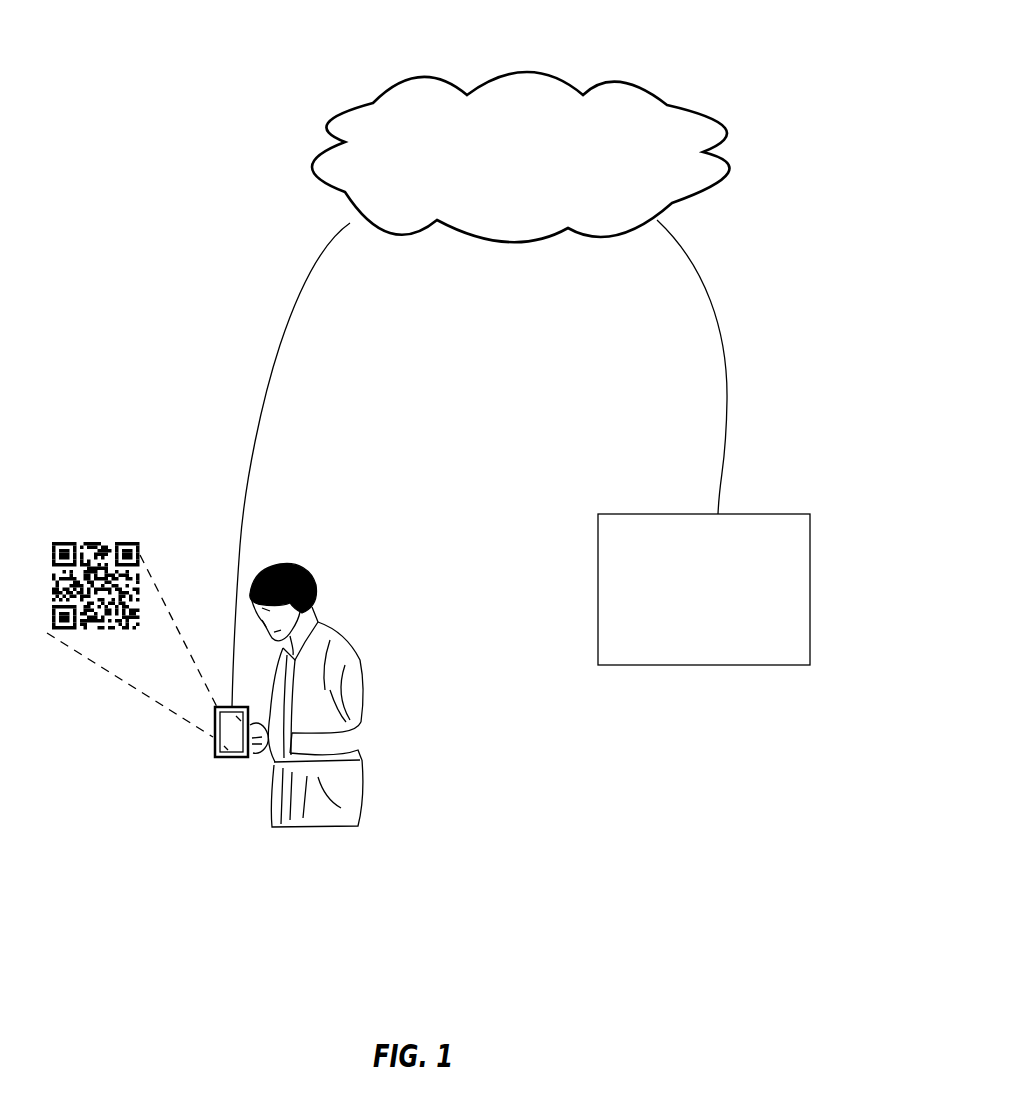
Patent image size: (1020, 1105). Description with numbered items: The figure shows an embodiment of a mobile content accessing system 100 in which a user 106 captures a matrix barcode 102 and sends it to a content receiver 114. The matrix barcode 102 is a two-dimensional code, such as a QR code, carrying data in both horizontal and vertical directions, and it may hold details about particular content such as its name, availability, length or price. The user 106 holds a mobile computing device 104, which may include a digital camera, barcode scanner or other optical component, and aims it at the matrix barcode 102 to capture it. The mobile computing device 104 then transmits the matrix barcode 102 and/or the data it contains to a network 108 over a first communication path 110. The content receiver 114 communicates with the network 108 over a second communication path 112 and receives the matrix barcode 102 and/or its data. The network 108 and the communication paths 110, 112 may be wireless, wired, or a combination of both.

The mobile content accessing system 100 is at (128, 270).
The matrix barcode 102 is at (95, 540).
The mobile computing device 104 is at (205, 733).
The user 106 is at (362, 660).
The network 108 is at (657, 92).
The first communication path 110 is at (272, 362).
The second communication path 112 is at (718, 306).
The content receiver 114 is at (677, 665).